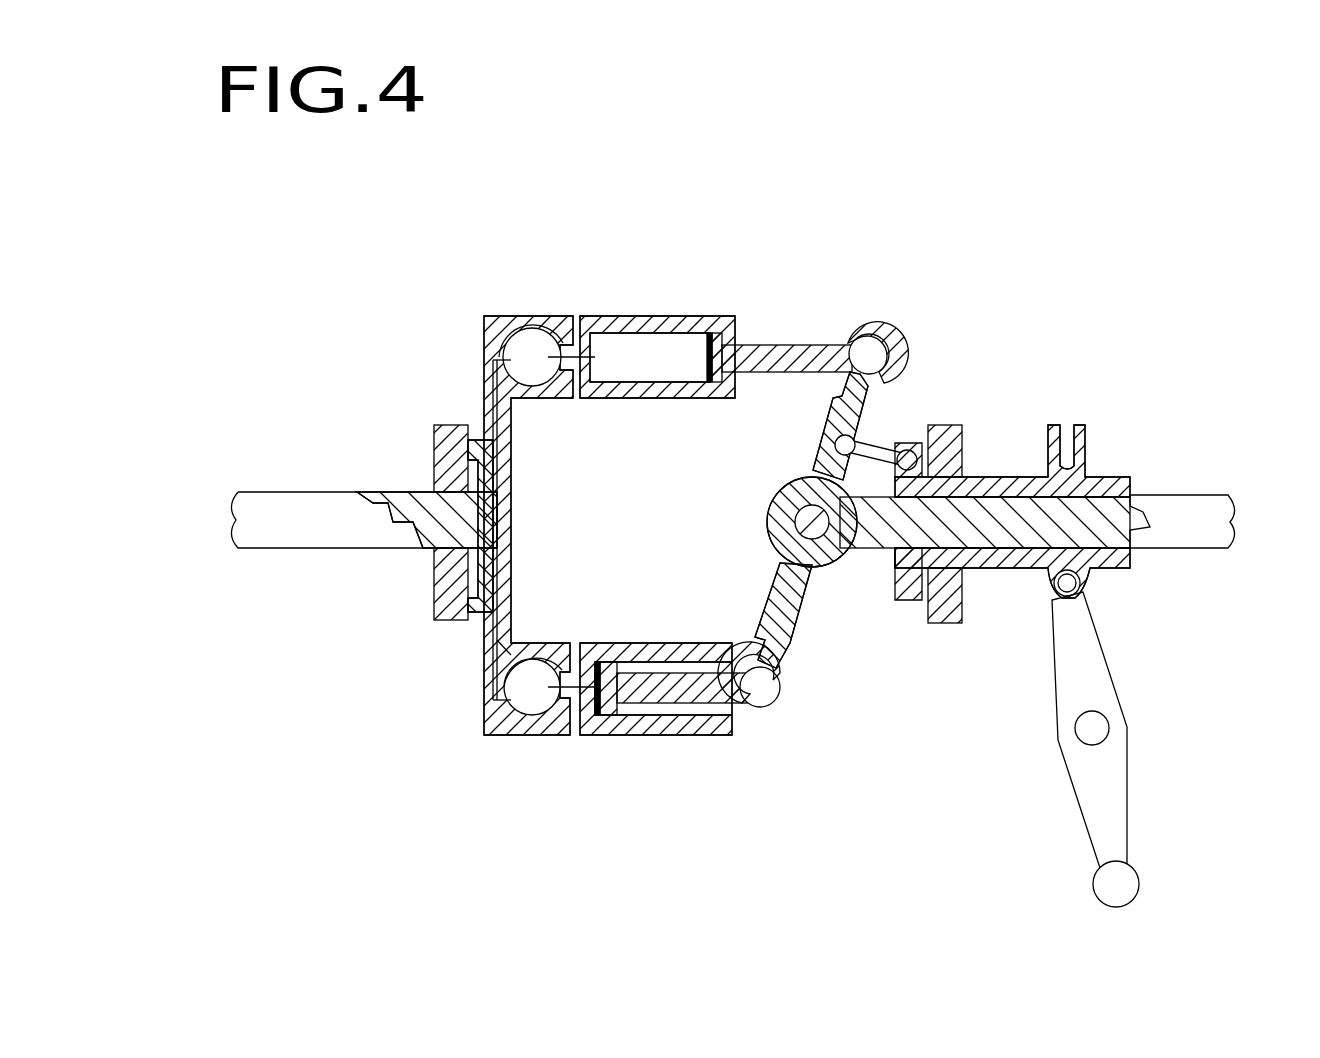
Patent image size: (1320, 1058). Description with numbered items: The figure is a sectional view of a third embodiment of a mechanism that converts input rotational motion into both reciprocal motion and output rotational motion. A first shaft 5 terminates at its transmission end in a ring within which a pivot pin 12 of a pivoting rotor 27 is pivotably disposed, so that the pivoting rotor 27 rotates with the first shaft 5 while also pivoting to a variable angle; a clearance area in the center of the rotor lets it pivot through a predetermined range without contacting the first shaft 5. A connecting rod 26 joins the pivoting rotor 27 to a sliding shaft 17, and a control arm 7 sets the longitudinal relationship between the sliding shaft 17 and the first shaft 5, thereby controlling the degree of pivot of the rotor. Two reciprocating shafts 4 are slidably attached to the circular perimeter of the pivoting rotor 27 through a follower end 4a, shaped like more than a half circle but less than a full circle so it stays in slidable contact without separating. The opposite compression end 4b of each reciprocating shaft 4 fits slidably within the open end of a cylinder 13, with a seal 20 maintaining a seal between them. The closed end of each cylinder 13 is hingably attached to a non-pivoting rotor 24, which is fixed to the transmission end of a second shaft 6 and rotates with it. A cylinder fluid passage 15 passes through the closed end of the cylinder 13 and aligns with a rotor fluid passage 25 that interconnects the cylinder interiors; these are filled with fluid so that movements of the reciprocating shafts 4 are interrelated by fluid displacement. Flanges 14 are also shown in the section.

The reciprocating shaft 4 is at (796, 345).
The follower end 4a is at (875, 334).
The compression end 4b is at (728, 333).
The first shaft 5 is at (1192, 502).
The second shaft 6 is at (292, 505).
The control arm 7 is at (1112, 570).
The pivot pin 12 is at (816, 540).
The cylinder 13 is at (638, 316).
The flange 14 is at (450, 605).
The cylinder fluid passage 15 is at (488, 722).
The sliding shaft 17 is at (1025, 480).
The seal 20 is at (710, 333).
The non-pivoting rotor 24 is at (494, 418).
The rotor fluid passage 25 is at (496, 646).
The connecting rod 26 is at (885, 447).
The pivoting rotor 27 is at (868, 402).